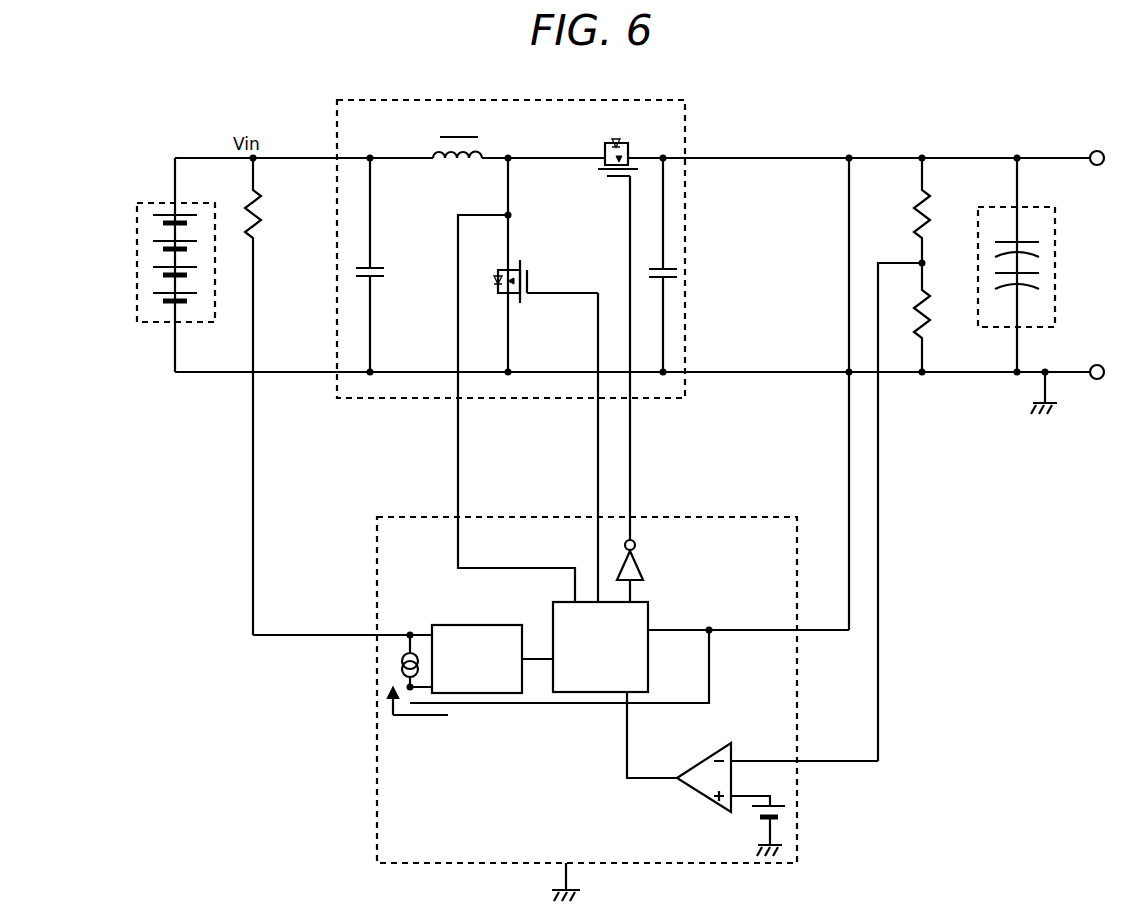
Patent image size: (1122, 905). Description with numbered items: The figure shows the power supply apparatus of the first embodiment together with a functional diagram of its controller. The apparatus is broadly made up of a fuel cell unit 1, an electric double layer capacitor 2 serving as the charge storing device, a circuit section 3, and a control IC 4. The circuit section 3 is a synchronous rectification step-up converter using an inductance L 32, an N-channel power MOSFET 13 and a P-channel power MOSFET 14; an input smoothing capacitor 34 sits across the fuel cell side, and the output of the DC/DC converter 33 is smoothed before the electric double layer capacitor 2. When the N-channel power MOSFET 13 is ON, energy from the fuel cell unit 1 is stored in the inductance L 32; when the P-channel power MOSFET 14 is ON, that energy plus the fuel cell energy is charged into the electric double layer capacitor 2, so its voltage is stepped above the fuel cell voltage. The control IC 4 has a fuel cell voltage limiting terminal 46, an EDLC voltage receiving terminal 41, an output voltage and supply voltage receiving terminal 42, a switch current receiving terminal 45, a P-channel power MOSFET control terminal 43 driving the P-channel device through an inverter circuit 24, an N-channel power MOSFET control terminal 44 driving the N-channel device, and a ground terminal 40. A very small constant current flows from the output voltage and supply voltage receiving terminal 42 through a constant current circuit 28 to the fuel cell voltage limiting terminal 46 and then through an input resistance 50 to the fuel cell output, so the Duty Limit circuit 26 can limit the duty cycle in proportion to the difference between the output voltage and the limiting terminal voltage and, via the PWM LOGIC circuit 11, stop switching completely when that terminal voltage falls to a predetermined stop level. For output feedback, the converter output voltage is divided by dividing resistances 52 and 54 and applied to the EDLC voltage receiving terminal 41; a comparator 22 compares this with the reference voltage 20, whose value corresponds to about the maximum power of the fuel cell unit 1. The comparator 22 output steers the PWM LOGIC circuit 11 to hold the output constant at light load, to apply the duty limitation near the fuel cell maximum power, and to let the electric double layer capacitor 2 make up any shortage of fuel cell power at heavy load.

The fuel cell unit 1 is at (154, 201).
The electric double layer capacitor 2 is at (1056, 232).
The circuit section 3 is at (337, 114).
The control IC 4 is at (797, 830).
The PWM LOGIC circuit 11 is at (649, 612).
The N-channel power MOSFET 13 is at (520, 262).
The P-channel power MOSFET 14 is at (612, 142).
The reference voltage 20 is at (755, 828).
The comparator 22 is at (720, 745).
The inverter circuit 24 is at (644, 572).
The Duty Limit circuit 26 is at (444, 625).
The current source 28 is at (400, 672).
The inductance L 32 is at (452, 137).
The DC/DC converter 33 is at (680, 273).
The input capacitor 34 is at (384, 272).
The GND terminal 40 is at (568, 876).
The FBout terminal 41 is at (824, 740).
The Vout terminal 42 is at (816, 614).
The TG terminal 43 is at (632, 466).
The BG terminal 44 is at (598, 466).
The SENSE terminal 45 is at (458, 470).
The Vlim terminal 46 is at (290, 634).
The Rin 50 is at (264, 202).
The dividing resistance 52 is at (930, 210).
The dividing resistance 54 is at (930, 335).